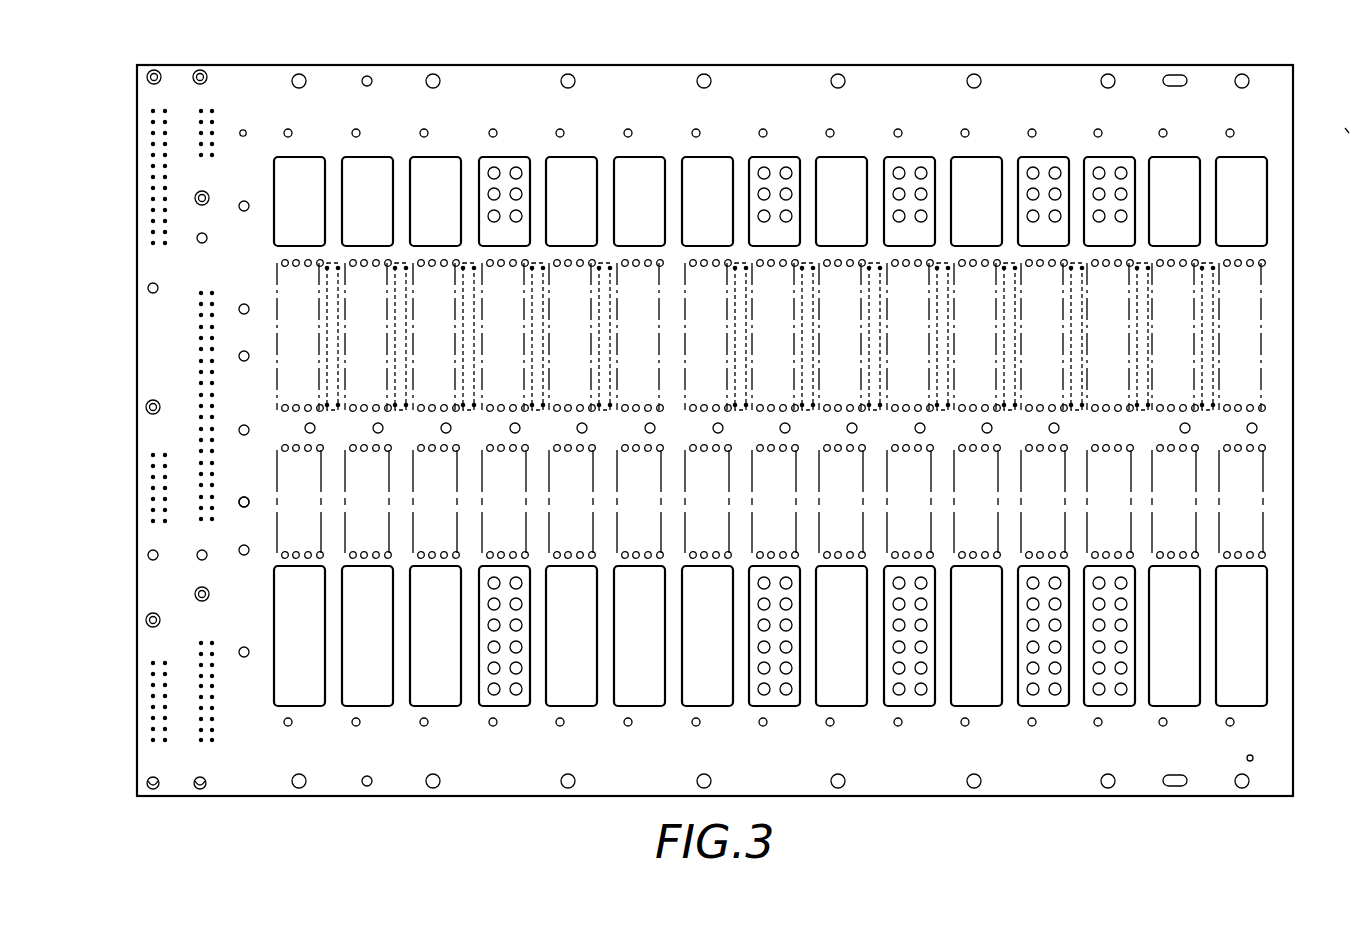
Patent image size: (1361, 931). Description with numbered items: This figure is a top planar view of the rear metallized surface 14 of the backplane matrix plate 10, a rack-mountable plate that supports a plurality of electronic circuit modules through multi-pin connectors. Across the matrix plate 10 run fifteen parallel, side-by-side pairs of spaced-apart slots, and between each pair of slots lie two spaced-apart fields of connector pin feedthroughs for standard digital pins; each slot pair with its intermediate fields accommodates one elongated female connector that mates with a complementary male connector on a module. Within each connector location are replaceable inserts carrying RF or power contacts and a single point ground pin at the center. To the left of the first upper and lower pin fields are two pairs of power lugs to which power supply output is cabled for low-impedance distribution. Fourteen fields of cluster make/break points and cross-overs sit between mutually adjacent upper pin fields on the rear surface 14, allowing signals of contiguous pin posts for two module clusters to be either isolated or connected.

The backplane matrix plate 10 is at (323, 51).
The rear metallized surface 14 is at (768, 65).